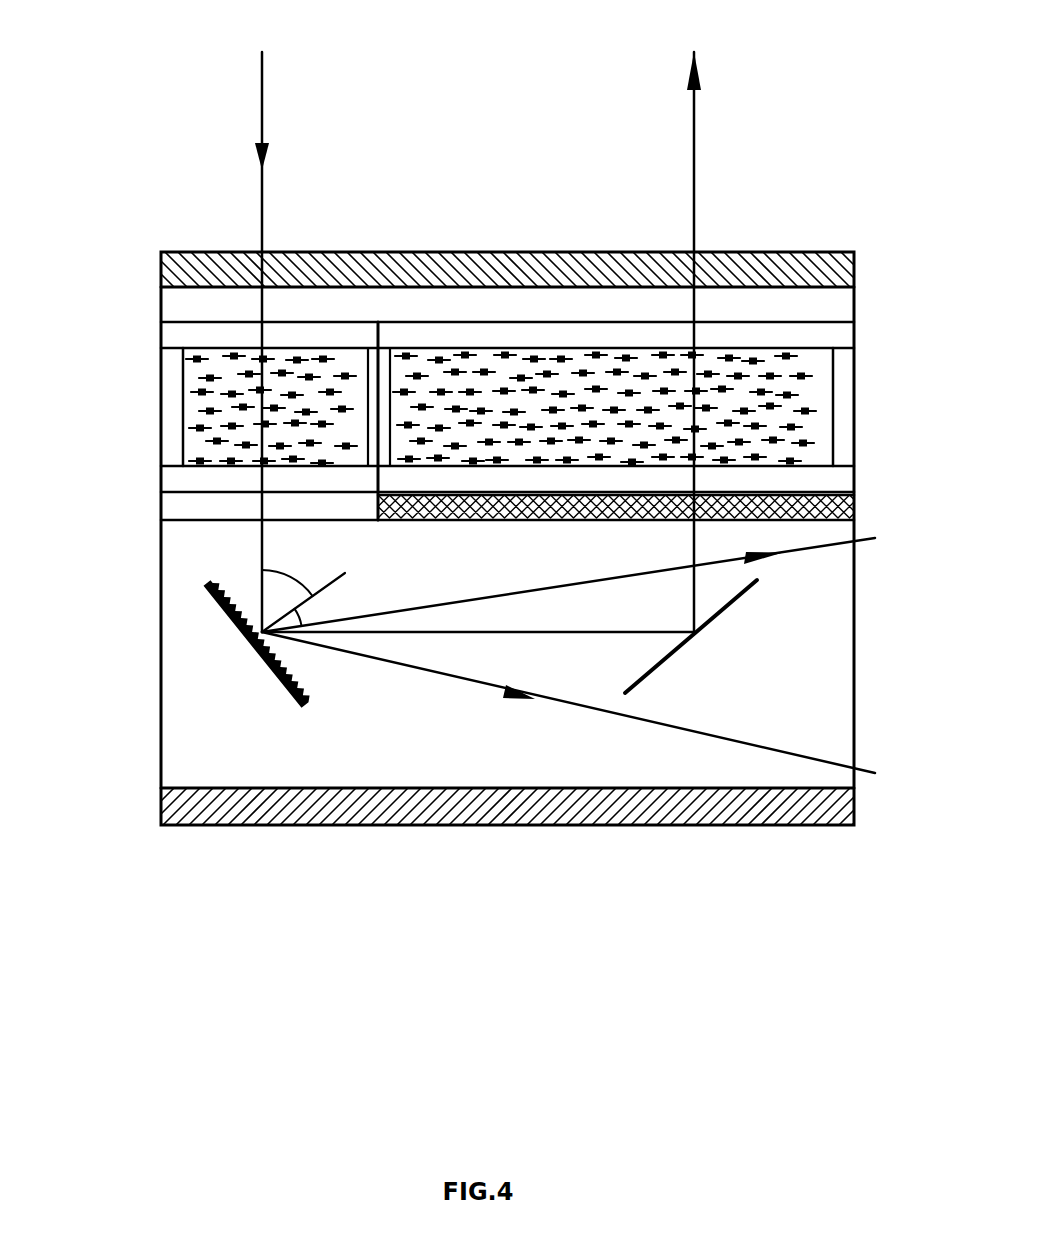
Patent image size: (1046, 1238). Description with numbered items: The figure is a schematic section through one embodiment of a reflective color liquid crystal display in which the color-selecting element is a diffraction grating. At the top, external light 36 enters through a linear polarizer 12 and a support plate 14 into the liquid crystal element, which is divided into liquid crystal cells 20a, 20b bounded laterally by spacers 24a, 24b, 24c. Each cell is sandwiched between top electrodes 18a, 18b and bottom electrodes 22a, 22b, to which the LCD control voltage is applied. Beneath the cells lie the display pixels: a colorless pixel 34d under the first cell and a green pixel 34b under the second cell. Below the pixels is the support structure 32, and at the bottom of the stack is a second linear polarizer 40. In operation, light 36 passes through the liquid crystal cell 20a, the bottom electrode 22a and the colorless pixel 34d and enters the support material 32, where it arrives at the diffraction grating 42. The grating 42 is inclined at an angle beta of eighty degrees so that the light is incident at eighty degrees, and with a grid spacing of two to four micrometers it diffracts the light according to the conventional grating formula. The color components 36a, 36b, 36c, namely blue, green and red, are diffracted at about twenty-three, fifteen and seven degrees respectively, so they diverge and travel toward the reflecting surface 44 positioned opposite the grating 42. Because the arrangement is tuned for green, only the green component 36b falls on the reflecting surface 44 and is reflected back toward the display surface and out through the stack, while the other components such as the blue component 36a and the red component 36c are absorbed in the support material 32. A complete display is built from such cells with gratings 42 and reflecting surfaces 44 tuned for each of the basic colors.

The linear polarizer 12 is at (732, 273).
The support plate 14 is at (225, 302).
The top electrode 18a is at (195, 338).
The top electrode 18b is at (807, 338).
The liquid crystal cell 20a is at (302, 422).
The liquid crystal cell 20b is at (670, 422).
The bottom electrode 22a is at (195, 480).
The bottom electrode 22b is at (815, 480).
The spacer 24a is at (170, 409).
The spacer 24b is at (383, 380).
The spacer 24c is at (838, 408).
The support structure 32 is at (732, 653).
The green display pixel 34b is at (815, 512).
The colorless display pixel 34d is at (195, 510).
The external light 36 is at (257, 327).
The blue color component of external light 36a is at (593, 711).
The green color component of external light 36b is at (702, 328).
The red color component of external light 36c is at (594, 579).
The linear polarizer 40 is at (197, 812).
The diffraction grating 42 is at (262, 632).
The reflecting surface 44 is at (727, 608).